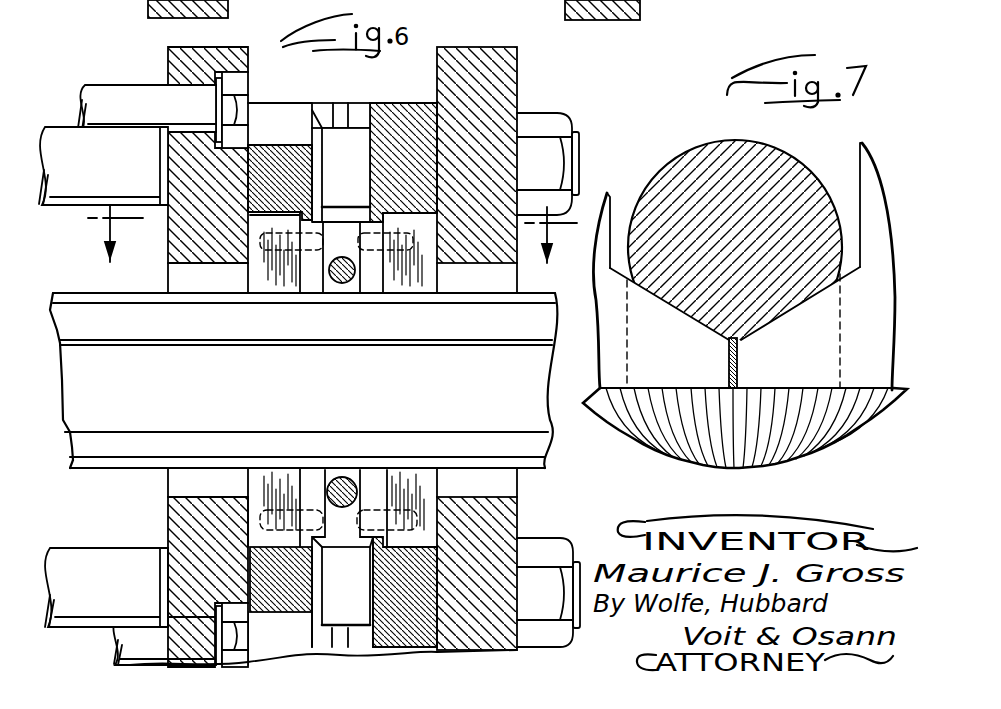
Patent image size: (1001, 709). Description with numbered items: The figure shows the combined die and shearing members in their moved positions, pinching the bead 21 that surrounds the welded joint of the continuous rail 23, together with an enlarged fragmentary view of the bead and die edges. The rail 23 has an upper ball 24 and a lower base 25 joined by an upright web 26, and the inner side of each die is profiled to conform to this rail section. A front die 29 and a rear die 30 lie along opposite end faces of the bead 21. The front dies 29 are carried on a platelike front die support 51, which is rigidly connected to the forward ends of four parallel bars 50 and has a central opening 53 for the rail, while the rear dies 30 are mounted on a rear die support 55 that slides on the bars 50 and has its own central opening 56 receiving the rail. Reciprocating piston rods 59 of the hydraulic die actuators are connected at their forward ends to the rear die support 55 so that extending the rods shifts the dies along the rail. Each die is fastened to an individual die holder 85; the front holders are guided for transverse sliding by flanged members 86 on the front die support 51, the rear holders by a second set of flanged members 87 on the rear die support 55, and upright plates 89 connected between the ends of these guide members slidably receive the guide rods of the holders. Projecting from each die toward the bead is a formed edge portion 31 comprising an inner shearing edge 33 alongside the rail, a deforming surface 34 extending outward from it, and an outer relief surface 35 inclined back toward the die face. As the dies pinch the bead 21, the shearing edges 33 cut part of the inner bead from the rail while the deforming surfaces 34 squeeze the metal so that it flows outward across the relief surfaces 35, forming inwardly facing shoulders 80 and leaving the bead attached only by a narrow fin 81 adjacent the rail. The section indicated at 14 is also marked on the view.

In FIG. 6, the section line 14 is at (332, 250).
In FIG. 6, the bead 21 is at (340, 257).
In FIG. 7, the bead 21 is at (735, 150).
In FIG. 6, the rail 23 is at (546, 428).
In FIG. 7, the rail 23 is at (703, 462).
In FIG. 6, the ball 24 is at (63, 323).
In FIG. 6, the base 25 is at (90, 461).
In FIG. 6, the web 26 is at (75, 383).
In FIG. 6, the front die 29 is at (366, 294).
In FIG. 7, the front die 29 is at (859, 203).
In FIG. 6, the rear die 30 is at (311, 294).
In FIG. 7, the rear die 30 is at (611, 212).
In FIG. 6, the formed edge portion 31 is at (343, 297).
In FIG. 7, the formed edge portion 31 is at (652, 361).
In FIG. 7, the shearing edge 33 is at (730, 386).
In FIG. 7, the deforming surface 34 is at (735, 338).
In FIG. 7, the relief surface 35 is at (674, 306).
In FIG. 6, the bars 50 is at (60, 135).
In FIG. 6, the front die support 51 is at (510, 80).
In FIG. 6, the central opening 53 is at (507, 498).
In FIG. 6, the rear die support 55 is at (178, 64).
In FIG. 6, the central opening 56 is at (180, 496).
In FIG. 6, the piston rods 59 is at (115, 88).
In FIG. 7, the shoulders 80 is at (682, 312).
In FIG. 7, the fin 81 is at (738, 350).
In FIG. 6, the die holder 85 is at (262, 488).
In FIG. 6, the flanged members 86 is at (403, 113).
In FIG. 6, the flanged members 87 is at (278, 156).
In FIG. 6, the upright plates 89 is at (328, 108).